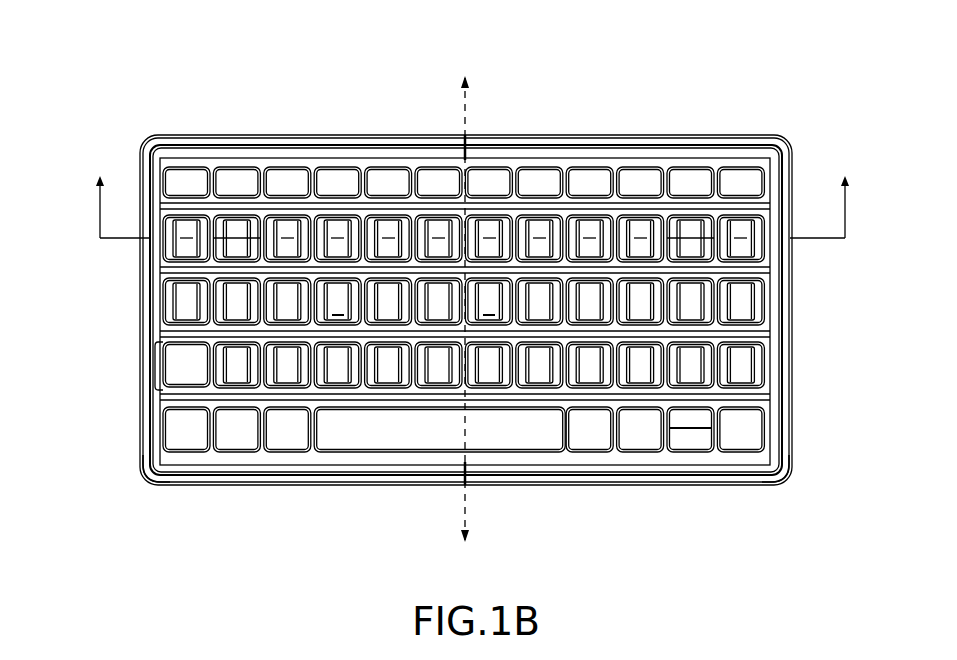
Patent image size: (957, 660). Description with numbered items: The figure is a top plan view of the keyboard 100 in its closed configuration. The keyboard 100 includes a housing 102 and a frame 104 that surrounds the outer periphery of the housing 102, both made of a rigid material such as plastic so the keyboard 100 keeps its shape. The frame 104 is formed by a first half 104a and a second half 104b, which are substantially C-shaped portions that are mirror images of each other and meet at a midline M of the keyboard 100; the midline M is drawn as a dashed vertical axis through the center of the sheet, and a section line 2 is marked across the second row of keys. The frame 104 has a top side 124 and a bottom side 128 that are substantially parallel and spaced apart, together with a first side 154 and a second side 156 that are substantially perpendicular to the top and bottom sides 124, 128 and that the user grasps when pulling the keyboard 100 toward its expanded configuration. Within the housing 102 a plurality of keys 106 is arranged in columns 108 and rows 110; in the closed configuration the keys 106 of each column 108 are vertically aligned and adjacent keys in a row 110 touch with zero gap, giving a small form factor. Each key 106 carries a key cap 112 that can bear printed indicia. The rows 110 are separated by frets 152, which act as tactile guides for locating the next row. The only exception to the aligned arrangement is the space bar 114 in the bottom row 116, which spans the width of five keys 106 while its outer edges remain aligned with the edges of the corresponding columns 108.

The keyboard 100 is at (129, 110).
The housing 102 is at (745, 168).
The frame 104 is at (397, 131).
The first half of frame 104a is at (143, 473).
The second half of frame 104b is at (782, 471).
The key 106 is at (185, 302).
The column 108 is at (264, 166).
The row 110 is at (468, 304).
The key cap 112 is at (232, 456).
The space bar 114 is at (407, 442).
The bottom row 116 is at (510, 475).
The top side of frame 124 is at (548, 137).
The bottom side of frame 128 is at (540, 484).
The fret 152 is at (762, 270).
The first side of frame 154 is at (148, 370).
The second side of frame 156 is at (792, 375).
The section line 2- 2 is at (473, 190).
The midline M is at (463, 307).